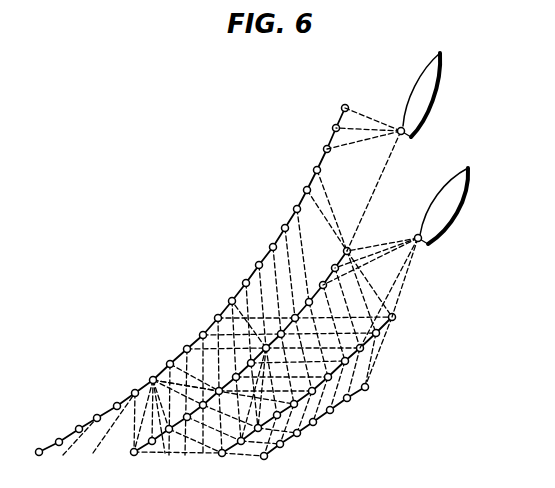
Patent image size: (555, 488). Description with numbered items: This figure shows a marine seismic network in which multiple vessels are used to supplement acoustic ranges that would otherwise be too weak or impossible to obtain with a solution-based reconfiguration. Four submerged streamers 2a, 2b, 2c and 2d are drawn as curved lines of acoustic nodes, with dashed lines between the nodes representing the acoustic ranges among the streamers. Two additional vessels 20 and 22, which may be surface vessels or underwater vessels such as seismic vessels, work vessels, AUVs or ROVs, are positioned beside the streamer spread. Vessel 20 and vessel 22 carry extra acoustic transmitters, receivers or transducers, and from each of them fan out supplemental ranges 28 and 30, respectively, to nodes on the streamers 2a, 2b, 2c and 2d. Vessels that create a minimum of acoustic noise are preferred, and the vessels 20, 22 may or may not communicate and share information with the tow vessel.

The vessel 20 is at (430, 83).
The vessel 22 is at (453, 195).
The supplemental ranges 28 is at (382, 123).
The supplemental ranges 30 is at (405, 263).
The streamer 2a is at (332, 136).
The streamer 2b is at (346, 256).
The streamer 2c is at (387, 328).
The streamer 2d is at (357, 394).